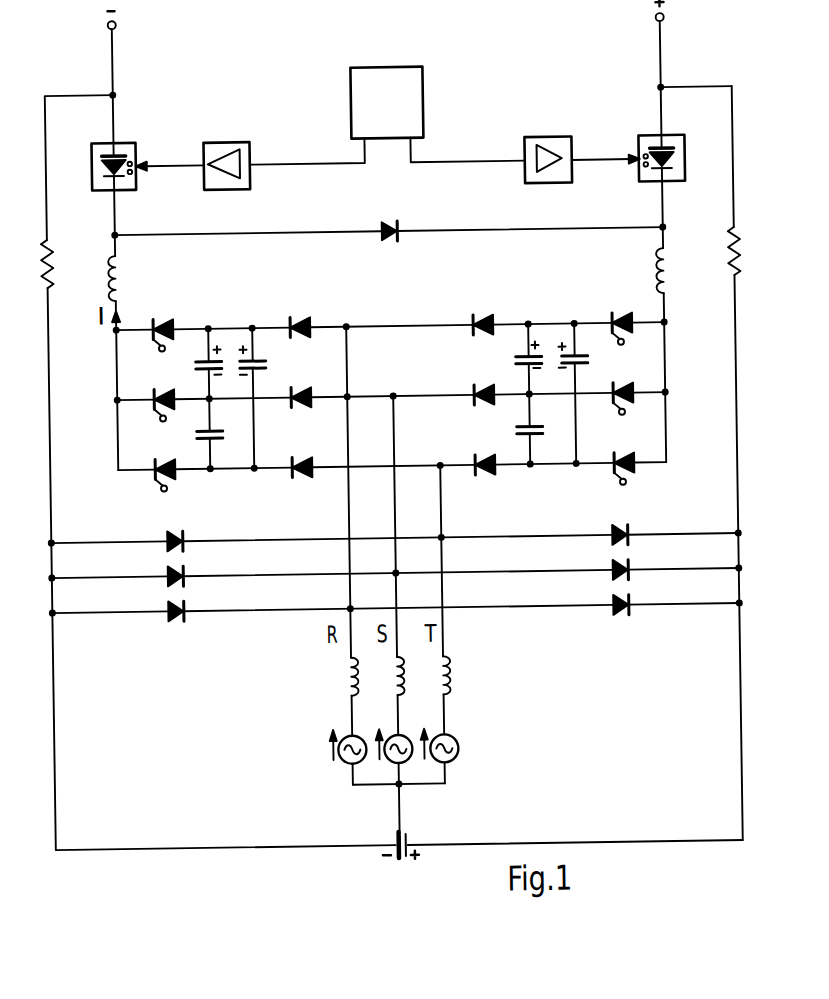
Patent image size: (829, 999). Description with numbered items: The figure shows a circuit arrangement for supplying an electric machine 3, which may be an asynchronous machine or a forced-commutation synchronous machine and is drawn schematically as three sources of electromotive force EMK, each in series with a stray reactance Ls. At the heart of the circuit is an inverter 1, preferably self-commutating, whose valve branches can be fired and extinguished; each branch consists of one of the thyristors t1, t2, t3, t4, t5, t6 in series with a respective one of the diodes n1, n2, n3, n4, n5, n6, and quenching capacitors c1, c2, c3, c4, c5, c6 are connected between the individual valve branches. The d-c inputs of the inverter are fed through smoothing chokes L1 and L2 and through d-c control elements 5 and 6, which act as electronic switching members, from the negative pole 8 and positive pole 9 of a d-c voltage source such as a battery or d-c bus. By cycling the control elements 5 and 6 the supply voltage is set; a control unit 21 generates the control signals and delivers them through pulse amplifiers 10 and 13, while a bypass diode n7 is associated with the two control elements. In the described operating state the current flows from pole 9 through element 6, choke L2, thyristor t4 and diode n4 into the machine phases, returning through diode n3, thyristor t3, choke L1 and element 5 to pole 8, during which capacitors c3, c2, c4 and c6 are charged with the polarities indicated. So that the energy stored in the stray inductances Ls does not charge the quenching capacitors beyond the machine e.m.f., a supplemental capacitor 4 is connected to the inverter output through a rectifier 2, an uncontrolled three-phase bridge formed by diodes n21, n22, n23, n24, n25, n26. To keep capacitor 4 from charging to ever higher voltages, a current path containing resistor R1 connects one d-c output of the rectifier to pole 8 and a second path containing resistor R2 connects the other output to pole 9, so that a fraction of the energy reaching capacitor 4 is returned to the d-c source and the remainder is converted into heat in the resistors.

The inverter 1 is at (399, 377).
The rectifier 2 is at (218, 588).
The electric machine 3 is at (424, 781).
The supplemental capacitor 4 is at (401, 838).
The d-c control element 5 is at (96, 165).
The d-c control element 6 is at (690, 158).
The negative pole 8 is at (122, 21).
The positive pole 9 is at (662, 21).
The pulse amplifier 10 is at (232, 139).
The pulse amplifier 13 is at (547, 139).
The control unit 21 is at (400, 116).
The bypass diode n7 is at (384, 233).
The diode n1 is at (309, 321).
The diode n2 is at (309, 391).
The diode n3 is at (309, 461).
The diode n4 is at (477, 322).
The diode n5 is at (477, 392).
The diode n6 is at (477, 462).
The thyristor t1 is at (155, 318).
The thyristor t2 is at (154, 388).
The thyristor t3 is at (157, 458).
The thyristor t4 is at (640, 308).
The thyristor t5 is at (640, 378).
The thyristor t6 is at (641, 447).
The quenching capacitor c1 is at (206, 356).
The quenching capacitor c2 is at (199, 436).
The quenching capacitor c3 is at (266, 361).
The quenching capacitor c4 is at (518, 364).
The quenching capacitor c5 is at (519, 436).
The quenching capacitor c6 is at (583, 342).
The diode n21 is at (166, 532).
The diode n22 is at (166, 567).
The diode n23 is at (166, 602).
The diode n24 is at (610, 533).
The diode n25 is at (610, 568).
The diode n26 is at (610, 603).
The resistor R1 is at (52, 242).
The resistor R2 is at (731, 253).
The smoothing choke L1 is at (126, 258).
The smoothing choke L2 is at (661, 268).
The stray reactance Ls is at (342, 676).
The source of electromotive force EMK is at (327, 747).